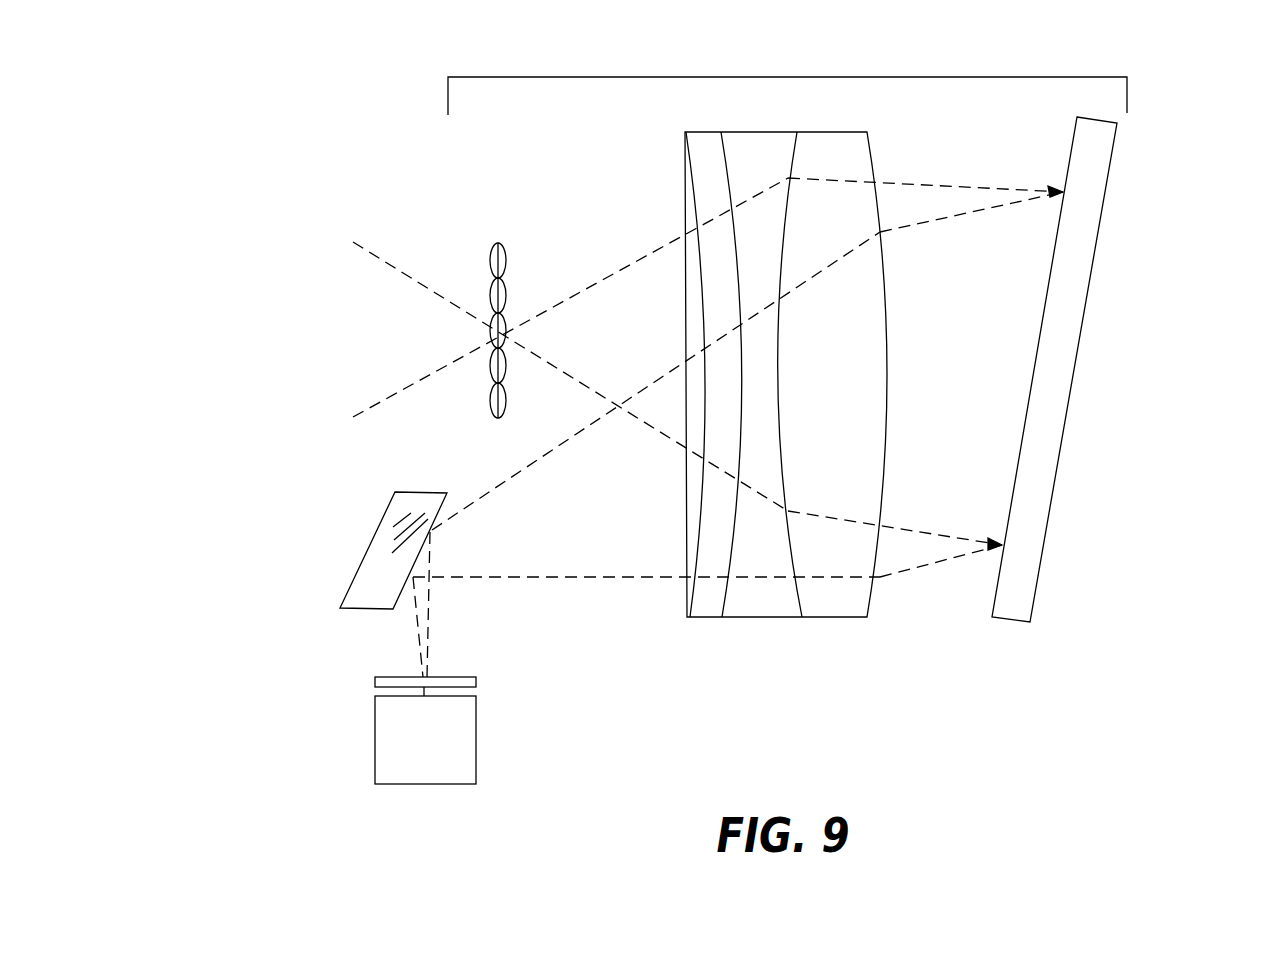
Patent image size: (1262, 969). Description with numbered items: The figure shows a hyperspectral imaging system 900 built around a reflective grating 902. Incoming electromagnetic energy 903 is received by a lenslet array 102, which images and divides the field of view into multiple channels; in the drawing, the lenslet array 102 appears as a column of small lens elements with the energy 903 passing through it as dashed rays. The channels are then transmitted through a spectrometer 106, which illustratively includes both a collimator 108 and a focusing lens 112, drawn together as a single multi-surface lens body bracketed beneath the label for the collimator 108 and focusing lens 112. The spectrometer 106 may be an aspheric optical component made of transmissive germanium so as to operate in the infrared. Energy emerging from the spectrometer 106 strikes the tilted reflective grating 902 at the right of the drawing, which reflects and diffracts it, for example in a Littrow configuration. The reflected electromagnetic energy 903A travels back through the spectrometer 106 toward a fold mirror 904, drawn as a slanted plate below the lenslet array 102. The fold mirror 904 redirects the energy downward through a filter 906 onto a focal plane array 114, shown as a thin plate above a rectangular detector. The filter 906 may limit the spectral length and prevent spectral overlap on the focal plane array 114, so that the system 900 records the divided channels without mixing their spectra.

The hyperspectral imaging system 900 is at (288, 141).
The spectrometer 106 is at (787, 77).
The lenslet array 102 is at (496, 243).
The electromagnetic energy 903 is at (393, 268).
The reflected electromagnetic energy 903A is at (945, 218).
The reflective grating 902 is at (1090, 268).
The fold mirror 904 is at (387, 583).
The filter 906 is at (477, 682).
The focal plane array 114 is at (413, 757).
The collimator 108 is at (782, 419).
The focusing lens 112 is at (786, 374).